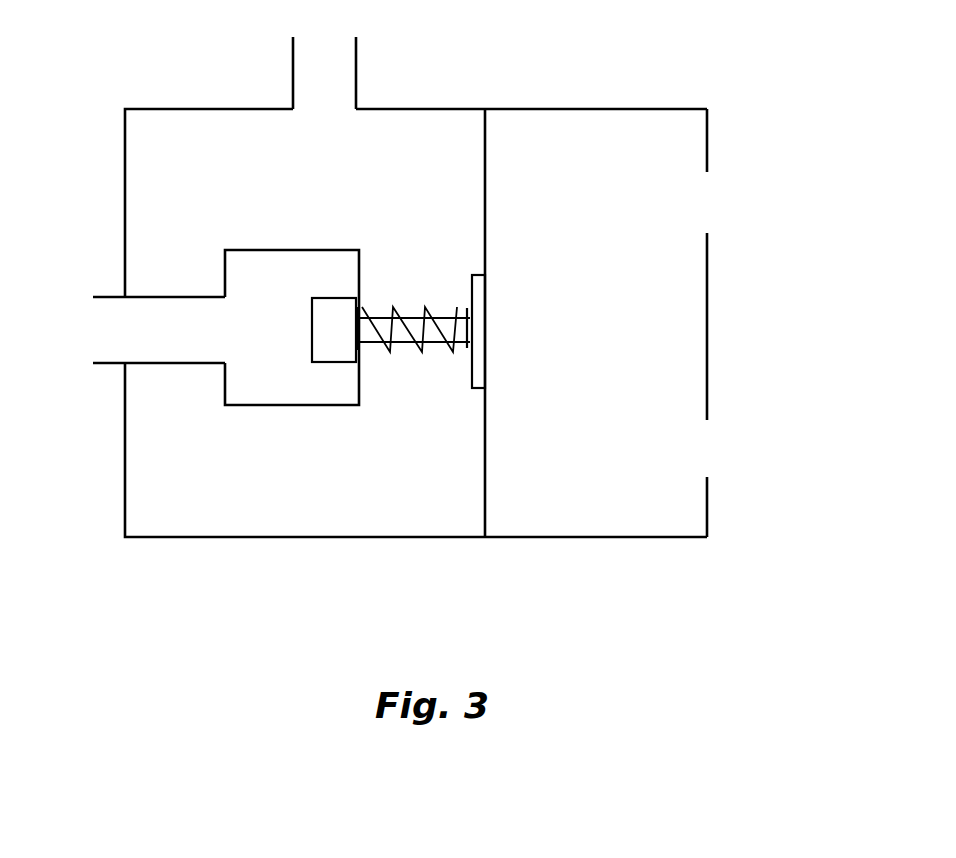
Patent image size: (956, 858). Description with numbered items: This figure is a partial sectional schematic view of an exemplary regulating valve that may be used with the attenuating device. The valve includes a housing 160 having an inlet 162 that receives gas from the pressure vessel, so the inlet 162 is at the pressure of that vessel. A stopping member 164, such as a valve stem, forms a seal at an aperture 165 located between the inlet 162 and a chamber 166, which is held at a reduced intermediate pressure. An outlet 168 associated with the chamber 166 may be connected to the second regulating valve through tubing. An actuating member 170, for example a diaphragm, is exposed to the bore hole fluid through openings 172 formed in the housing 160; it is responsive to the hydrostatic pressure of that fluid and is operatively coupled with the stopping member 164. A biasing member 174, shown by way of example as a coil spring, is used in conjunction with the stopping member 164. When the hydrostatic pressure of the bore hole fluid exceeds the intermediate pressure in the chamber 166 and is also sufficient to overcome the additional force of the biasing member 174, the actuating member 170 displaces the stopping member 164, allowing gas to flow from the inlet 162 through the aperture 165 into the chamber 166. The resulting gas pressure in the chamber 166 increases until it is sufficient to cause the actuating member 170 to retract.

The housing 160 is at (260, 537).
The inlet 162 is at (112, 297).
The stopping member 164 is at (340, 365).
The aperture 165 is at (352, 307).
The chamber 166 is at (346, 187).
The outlet 168 is at (357, 73).
The actuating member 170 is at (487, 145).
The openings 172 is at (718, 192).
The biasing member 174 is at (418, 318).